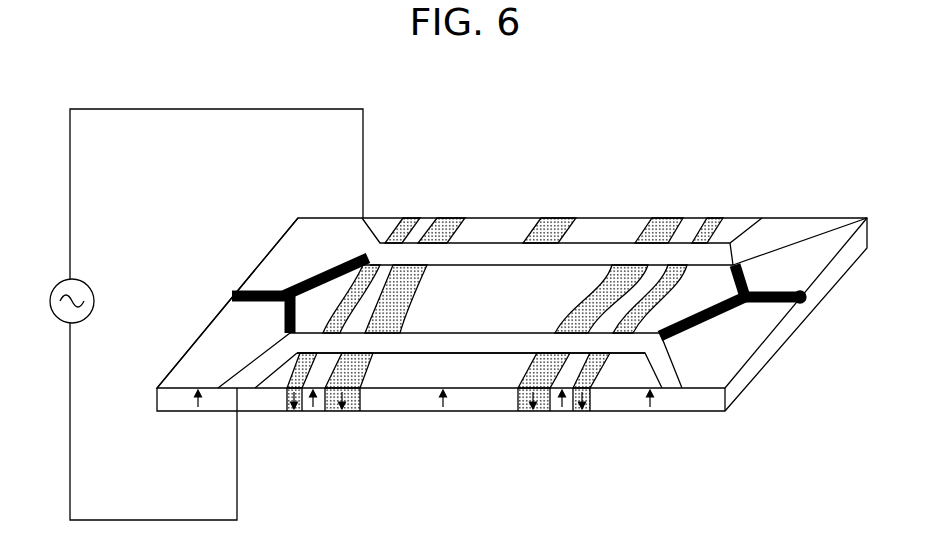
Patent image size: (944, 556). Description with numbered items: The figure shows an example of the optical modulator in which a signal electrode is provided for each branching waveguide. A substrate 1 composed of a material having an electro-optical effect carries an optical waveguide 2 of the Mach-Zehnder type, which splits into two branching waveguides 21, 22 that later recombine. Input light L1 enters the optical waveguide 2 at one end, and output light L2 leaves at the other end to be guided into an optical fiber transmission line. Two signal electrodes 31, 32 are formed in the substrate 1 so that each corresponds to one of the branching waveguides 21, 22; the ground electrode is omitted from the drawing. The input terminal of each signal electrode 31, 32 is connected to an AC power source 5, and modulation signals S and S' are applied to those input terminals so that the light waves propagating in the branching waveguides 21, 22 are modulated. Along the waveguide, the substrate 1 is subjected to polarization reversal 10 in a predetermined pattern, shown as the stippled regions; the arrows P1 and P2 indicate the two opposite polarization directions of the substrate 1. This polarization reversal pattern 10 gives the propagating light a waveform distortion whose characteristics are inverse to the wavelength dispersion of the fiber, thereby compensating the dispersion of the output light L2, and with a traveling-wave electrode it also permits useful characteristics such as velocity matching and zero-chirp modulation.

The substrate 1 is at (175, 413).
The optical waveguide 2 is at (684, 348).
The AC power source 5 is at (90, 288).
The polarization reversal pattern 10 is at (538, 236).
The branching waveguide 21 is at (748, 278).
The branching waveguide 22 is at (717, 322).
The signal electrode 31 is at (363, 243).
The signal electrode 32 is at (272, 362).
The modulation signal S is at (351, 186).
The modulation signal S' is at (226, 444).
The input light L1 is at (232, 296).
The output light L2 is at (812, 297).
The polarization direction P1 is at (443, 405).
The polarization direction P2 is at (353, 396).